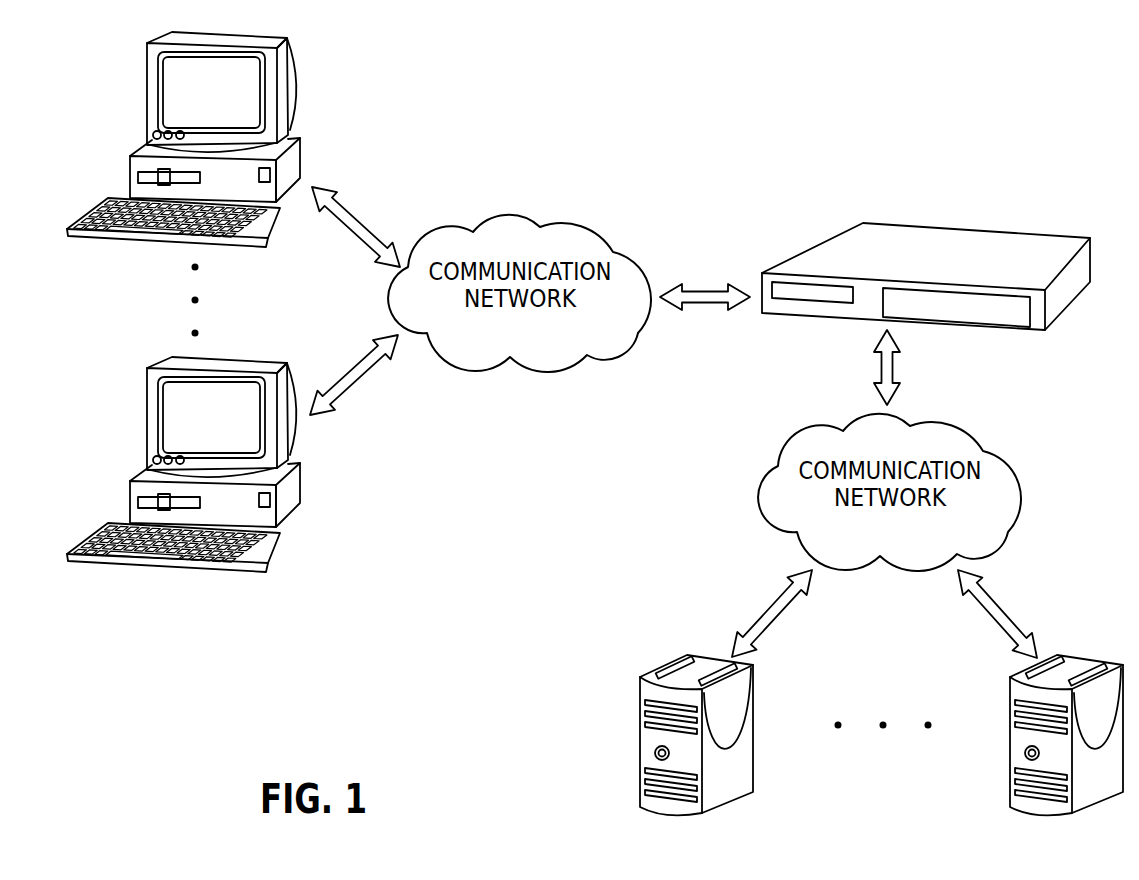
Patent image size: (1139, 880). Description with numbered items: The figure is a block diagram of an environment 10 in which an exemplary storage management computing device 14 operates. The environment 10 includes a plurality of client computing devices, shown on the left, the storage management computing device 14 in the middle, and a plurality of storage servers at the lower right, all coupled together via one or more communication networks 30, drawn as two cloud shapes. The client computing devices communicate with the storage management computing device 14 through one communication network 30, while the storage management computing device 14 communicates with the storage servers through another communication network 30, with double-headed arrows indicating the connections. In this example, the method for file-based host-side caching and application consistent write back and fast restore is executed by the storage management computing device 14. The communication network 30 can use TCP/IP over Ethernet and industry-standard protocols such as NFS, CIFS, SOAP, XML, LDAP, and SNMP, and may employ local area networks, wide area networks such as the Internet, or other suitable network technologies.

The environment 10 is at (666, 153).
The storage management computing device 14 is at (993, 232).
The communication network 30 is at (507, 340).